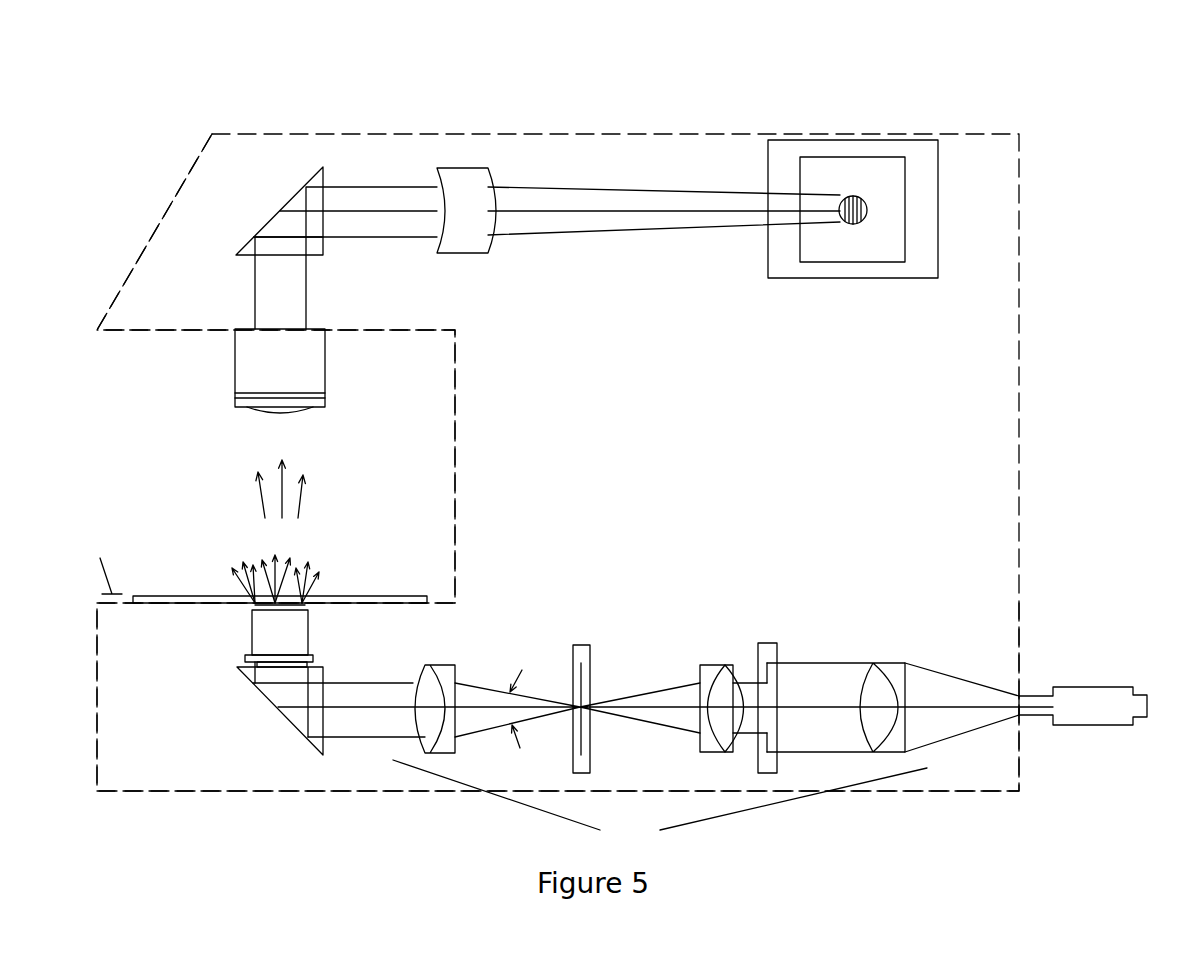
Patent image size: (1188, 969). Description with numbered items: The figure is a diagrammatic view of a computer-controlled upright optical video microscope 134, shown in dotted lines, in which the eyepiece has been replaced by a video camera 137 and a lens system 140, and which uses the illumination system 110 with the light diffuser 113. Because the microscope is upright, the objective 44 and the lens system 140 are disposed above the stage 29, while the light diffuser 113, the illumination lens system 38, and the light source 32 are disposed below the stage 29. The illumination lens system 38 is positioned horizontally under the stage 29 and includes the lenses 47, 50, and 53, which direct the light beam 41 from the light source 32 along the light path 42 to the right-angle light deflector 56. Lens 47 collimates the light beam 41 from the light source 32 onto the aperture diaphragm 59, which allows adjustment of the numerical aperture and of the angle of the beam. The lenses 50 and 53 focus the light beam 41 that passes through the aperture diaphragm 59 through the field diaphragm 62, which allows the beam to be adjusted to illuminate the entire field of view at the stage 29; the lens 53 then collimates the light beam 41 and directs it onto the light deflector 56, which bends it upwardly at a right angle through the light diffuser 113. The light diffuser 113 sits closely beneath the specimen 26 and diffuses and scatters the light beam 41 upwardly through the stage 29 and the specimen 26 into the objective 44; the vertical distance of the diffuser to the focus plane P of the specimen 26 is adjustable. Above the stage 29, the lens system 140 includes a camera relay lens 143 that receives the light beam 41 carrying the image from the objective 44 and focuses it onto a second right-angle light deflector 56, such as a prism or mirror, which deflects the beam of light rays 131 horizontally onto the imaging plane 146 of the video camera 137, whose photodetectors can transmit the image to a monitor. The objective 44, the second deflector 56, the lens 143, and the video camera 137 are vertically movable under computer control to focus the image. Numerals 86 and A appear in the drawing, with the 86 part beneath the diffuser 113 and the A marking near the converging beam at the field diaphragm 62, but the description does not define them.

The computer-controlled upright optical video microscope 134 is at (605, 113).
The lens system 140 is at (535, 145).
The illumination system 110 is at (666, 519).
The right-angle light deflector 56 is at (263, 210).
The light path 42 is at (670, 205).
The light beam 41 is at (600, 238).
The camera relay lens 143 is at (483, 260).
The video camera 137 is at (943, 152).
The imaging plane 146 is at (912, 208).
The objective 44 is at (220, 378).
The light rays 131 is at (235, 550).
The specimen 26 is at (288, 590).
The stage 29 is at (385, 587).
The focus plane P is at (97, 558).
The light diffuser 113 is at (240, 630).
The base flange 86 is at (238, 657).
The lens 53 is at (447, 660).
The aperture A is at (528, 689).
The field diaphragm 62 is at (584, 640).
The lens 50 is at (717, 652).
The aperture diaphragm 59 is at (780, 632).
The lens 47 is at (890, 645).
The light source 32 is at (1095, 662).
The illumination lens system 38 is at (660, 807).